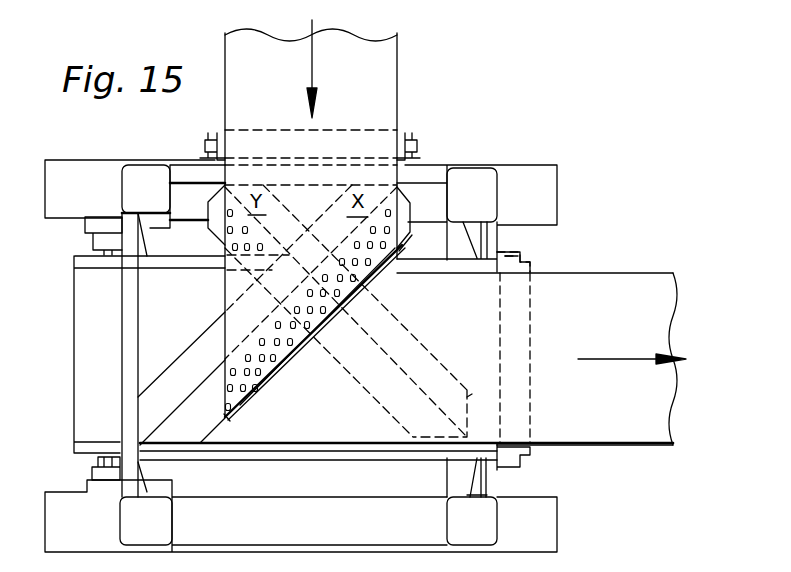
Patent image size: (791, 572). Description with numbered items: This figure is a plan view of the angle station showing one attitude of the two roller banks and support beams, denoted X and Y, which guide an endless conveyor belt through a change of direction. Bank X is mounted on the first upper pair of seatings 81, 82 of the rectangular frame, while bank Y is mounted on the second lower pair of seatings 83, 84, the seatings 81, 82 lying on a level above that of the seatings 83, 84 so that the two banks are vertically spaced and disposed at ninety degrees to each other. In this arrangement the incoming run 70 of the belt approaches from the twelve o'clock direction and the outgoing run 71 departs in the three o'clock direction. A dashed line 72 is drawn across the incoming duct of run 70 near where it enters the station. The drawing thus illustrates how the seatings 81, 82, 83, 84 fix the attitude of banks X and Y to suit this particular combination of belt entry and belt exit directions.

The incoming run 70 is at (312, 50).
The outgoing run 71 is at (618, 357).
The diffuser inlet plane 72 is at (355, 130).
The upper seating 81 is at (371, 180).
The upper seating 82 is at (140, 423).
The lower seating 83 is at (254, 180).
The lower seating 84 is at (470, 420).